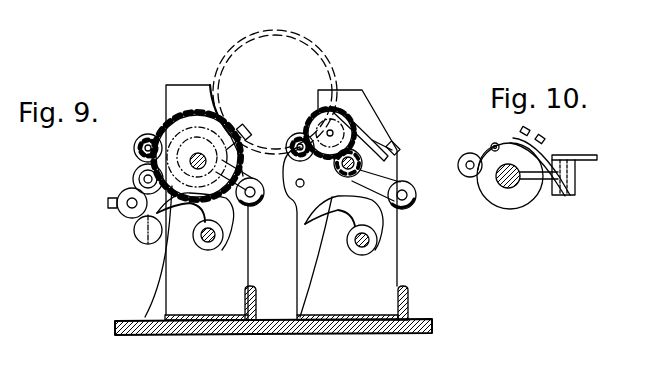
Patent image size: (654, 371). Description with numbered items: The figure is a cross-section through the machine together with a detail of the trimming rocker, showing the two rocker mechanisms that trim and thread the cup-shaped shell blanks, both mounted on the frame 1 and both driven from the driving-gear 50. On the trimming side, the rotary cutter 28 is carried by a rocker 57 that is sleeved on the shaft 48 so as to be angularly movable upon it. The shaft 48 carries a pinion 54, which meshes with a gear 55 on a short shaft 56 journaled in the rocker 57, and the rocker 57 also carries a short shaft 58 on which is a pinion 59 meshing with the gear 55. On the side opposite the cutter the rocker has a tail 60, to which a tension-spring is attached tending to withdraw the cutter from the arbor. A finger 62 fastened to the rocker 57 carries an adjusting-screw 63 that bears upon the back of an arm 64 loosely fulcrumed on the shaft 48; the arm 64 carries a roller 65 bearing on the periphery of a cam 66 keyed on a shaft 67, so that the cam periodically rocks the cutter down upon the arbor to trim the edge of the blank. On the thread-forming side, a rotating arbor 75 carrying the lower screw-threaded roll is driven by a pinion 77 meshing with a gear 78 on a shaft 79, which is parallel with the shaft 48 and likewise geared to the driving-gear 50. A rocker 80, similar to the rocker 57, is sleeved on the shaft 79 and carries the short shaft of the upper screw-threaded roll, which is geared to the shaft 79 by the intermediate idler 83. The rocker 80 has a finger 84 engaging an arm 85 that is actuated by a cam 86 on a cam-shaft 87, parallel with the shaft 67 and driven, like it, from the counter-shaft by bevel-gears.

In FIG. 9, the frame 1 is at (115, 320).
In FIG. 9, the driving-gear 50 is at (275, 92).
In FIG. 9, the intermediate idler 83 is at (173, 117).
In FIG. 9, the shaft 79 is at (197, 156).
In FIG. 9, the gear 78 is at (190, 168).
In FIG. 9, the rocker 80 is at (139, 146).
In FIG. 9, the rotating arbor 75 is at (140, 178).
In FIG. 9, the pinion 77 is at (135, 186).
In FIG. 9, the finger 84 is at (247, 124).
In FIG. 9, the arm 85 is at (258, 203).
In FIG. 9, the cam 86 is at (195, 221).
In FIG. 9, the cam-shaft 87 is at (205, 249).
In FIG. 9, the short shaft 56 is at (340, 125).
In FIG. 10, the short shaft 56 is at (494, 143).
In FIG. 9, the pinion 59 is at (291, 146).
In FIG. 9, the shaft 48 is at (340, 163).
In FIG. 10, the shaft 48 is at (499, 184).
In FIG. 9, the pinion 54 is at (313, 185).
In FIG. 9, the arm 64 is at (376, 184).
In FIG. 9, the roller 65 is at (411, 204).
In FIG. 9, the gear 55 is at (358, 129).
In FIG. 9, the finger 62 is at (376, 137).
In FIG. 9, the adjusting-screw 63 is at (400, 147).
In FIG. 9, the cam 66 is at (344, 223).
In FIG. 9, the shaft 67 is at (372, 249).
In FIG. 10, the rocker 57 is at (518, 200).
In FIG. 10, the rotary cutter 28 is at (471, 160).
In FIG. 10, the short shaft 58 is at (466, 167).
In FIG. 10, the tail 60 is at (597, 158).